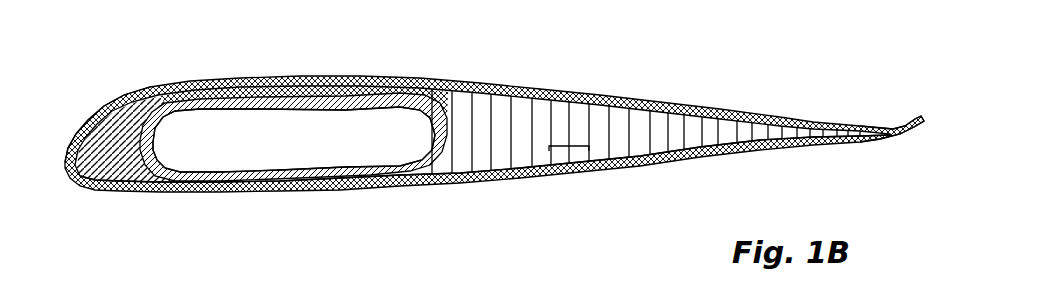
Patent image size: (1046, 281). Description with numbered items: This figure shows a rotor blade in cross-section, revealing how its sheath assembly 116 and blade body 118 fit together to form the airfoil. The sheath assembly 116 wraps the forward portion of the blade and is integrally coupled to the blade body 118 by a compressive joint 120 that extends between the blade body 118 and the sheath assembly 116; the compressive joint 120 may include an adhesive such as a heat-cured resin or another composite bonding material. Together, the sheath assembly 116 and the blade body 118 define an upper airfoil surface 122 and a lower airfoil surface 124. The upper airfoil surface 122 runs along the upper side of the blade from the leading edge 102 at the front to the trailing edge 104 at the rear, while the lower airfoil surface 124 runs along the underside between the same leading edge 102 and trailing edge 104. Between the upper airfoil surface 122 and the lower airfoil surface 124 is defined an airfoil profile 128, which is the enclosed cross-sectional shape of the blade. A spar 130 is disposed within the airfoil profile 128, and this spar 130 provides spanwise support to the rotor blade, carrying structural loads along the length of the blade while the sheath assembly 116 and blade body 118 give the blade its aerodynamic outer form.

The leading edge 102 is at (68, 175).
The trailing edge 104 is at (913, 114).
The sheath assembly 116 is at (207, 90).
The blade body 118 is at (655, 138).
The compressive joint 120 is at (315, 111).
The upper airfoil surface 122 is at (545, 78).
The lower airfoil surface 124 is at (402, 193).
The airfoil profile 128 is at (569, 137).
The spar 130 is at (222, 168).